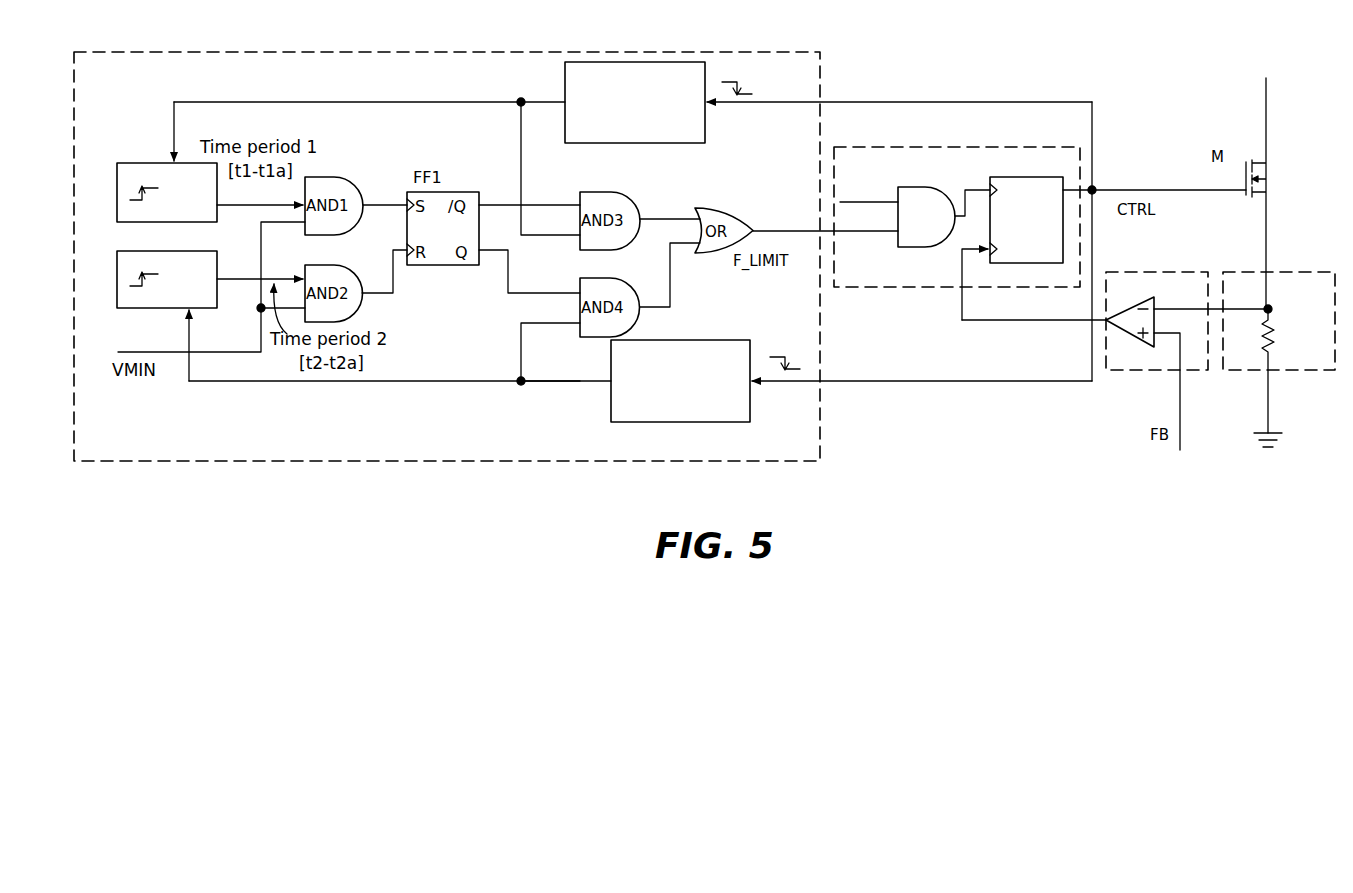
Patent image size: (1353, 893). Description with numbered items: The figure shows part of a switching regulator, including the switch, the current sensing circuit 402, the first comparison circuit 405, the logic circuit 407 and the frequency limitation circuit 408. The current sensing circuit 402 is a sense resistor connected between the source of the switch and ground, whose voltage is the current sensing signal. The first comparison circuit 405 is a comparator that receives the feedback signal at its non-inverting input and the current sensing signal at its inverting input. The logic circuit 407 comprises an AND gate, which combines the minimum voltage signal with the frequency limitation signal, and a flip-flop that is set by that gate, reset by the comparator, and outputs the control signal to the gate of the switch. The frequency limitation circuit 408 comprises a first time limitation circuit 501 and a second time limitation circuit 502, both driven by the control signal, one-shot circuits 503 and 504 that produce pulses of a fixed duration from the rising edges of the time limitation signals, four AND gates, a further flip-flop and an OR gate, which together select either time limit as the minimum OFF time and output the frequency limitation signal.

The frequency limitation circuit 408 is at (207, 462).
The first time limitation circuit 501 is at (652, 144).
The second time limitation circuit 502 is at (690, 423).
The one-shot circuit 503 is at (143, 223).
The one-shot circuit 504 is at (144, 309).
The logic circuit 407 is at (1058, 288).
The first comparison circuit 405 is at (1165, 371).
The current sensing circuit 402 is at (1280, 371).